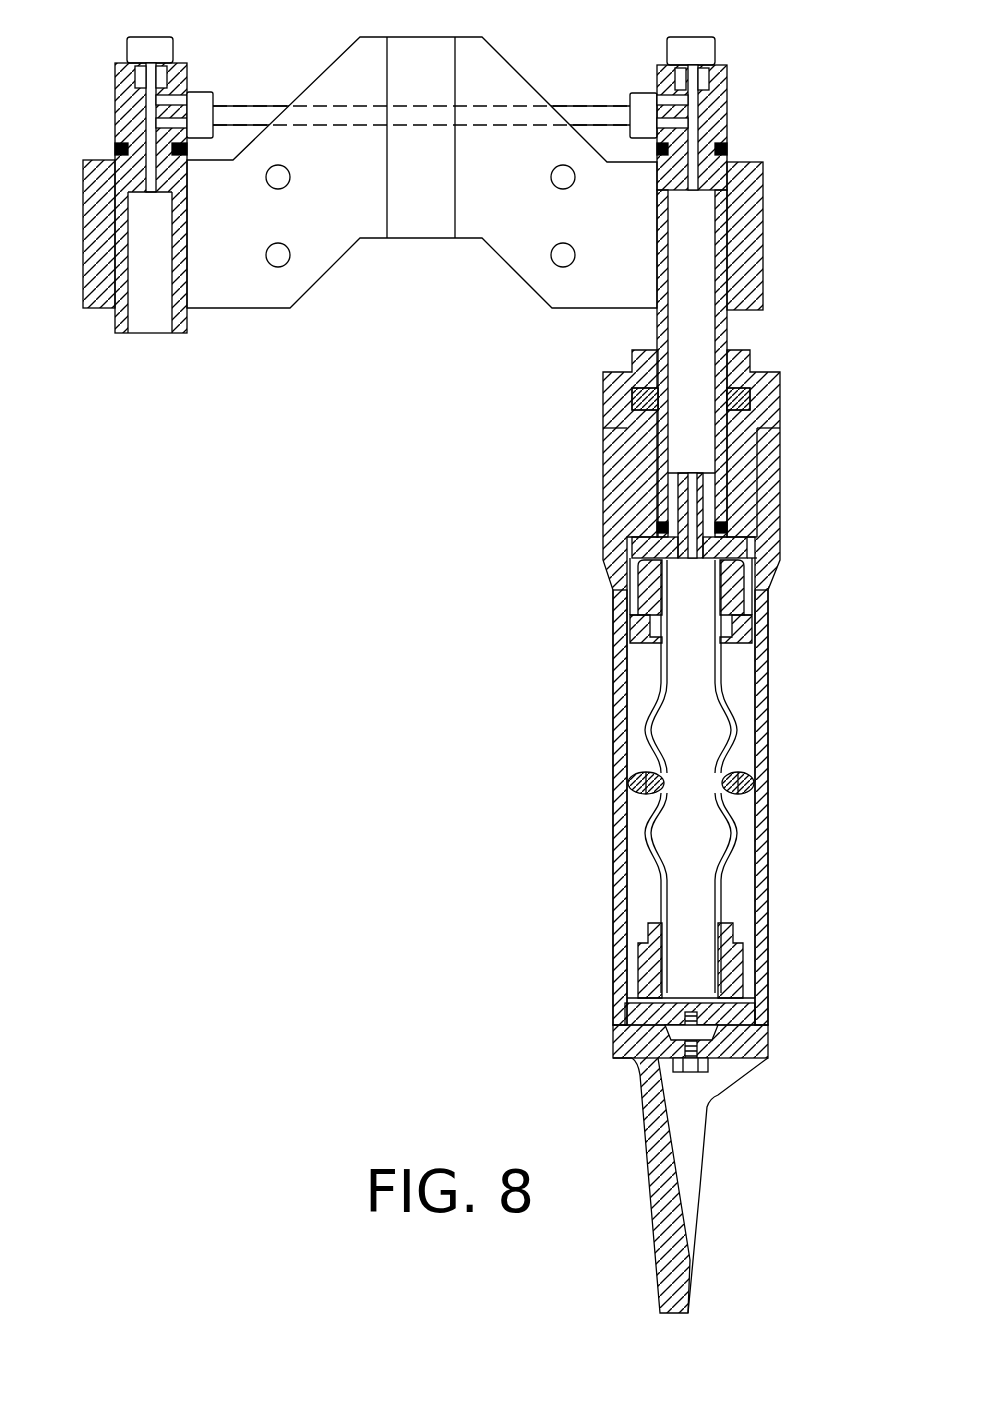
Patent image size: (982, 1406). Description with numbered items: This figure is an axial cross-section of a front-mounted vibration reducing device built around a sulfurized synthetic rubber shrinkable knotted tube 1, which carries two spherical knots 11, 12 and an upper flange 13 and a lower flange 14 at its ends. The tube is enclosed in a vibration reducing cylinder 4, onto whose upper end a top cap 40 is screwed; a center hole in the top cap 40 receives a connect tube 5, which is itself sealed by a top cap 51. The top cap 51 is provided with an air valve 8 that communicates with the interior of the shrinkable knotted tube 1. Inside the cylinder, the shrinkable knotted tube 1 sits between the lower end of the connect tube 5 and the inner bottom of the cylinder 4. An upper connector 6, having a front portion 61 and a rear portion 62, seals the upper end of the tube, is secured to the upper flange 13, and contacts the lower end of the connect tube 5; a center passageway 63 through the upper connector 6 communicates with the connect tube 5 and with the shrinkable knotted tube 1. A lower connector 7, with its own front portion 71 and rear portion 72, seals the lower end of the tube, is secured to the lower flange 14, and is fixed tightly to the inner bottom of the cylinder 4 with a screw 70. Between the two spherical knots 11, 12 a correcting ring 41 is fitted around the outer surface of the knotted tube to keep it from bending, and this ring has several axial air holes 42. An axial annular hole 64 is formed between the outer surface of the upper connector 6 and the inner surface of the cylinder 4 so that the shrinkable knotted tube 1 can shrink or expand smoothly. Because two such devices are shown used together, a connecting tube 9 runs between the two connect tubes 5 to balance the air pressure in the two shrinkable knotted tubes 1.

The shrinkable knotted tube 1 is at (751, 776).
The vibration reducing cylinder 4 is at (613, 719).
The connect tube 5 is at (717, 271).
The upper connector 6 is at (740, 633).
The lower connector 7 is at (674, 941).
The air valve 8 is at (676, 50).
The connecting tube 9 is at (593, 110).
The spherical knot 11 is at (735, 732).
The spherical knot 12 is at (737, 835).
The upper flange 13 is at (757, 540).
The lower flange 14 is at (627, 1002).
The top cap 40 is at (607, 393).
The correcting ring 41 is at (628, 780).
The air holes 42 is at (640, 795).
The top cap 51 is at (720, 115).
The front portion 61 is at (645, 548).
The rear portion 62 is at (633, 630).
The center passageway 63 is at (670, 500).
The axial annular hole 64 is at (767, 588).
The screw 70 is at (693, 1072).
The front portion 71 is at (633, 962).
The rear portion 72 is at (645, 922).